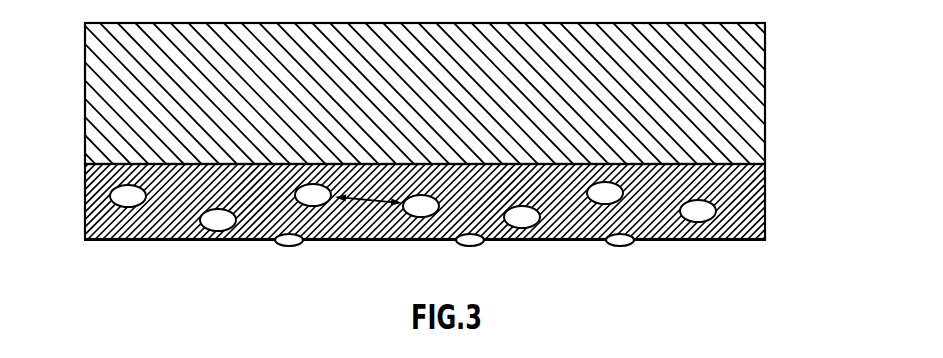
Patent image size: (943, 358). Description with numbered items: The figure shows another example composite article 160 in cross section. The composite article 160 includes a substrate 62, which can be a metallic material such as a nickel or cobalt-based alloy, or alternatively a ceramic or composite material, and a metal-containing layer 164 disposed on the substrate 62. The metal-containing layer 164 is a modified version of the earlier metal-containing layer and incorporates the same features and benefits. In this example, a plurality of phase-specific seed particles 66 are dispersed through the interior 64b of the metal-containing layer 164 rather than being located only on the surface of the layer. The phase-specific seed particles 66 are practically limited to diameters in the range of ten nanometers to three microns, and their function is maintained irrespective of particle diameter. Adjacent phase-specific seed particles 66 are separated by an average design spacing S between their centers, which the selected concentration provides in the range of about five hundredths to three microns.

The substrate 62 is at (765, 68).
The metal-containing layer 164 is at (428, 227).
The interior 64b is at (165, 222).
The phase-specific seed particles 66 is at (702, 223).
The average design spacing S is at (373, 201).
The composite article 160 is at (446, 158).